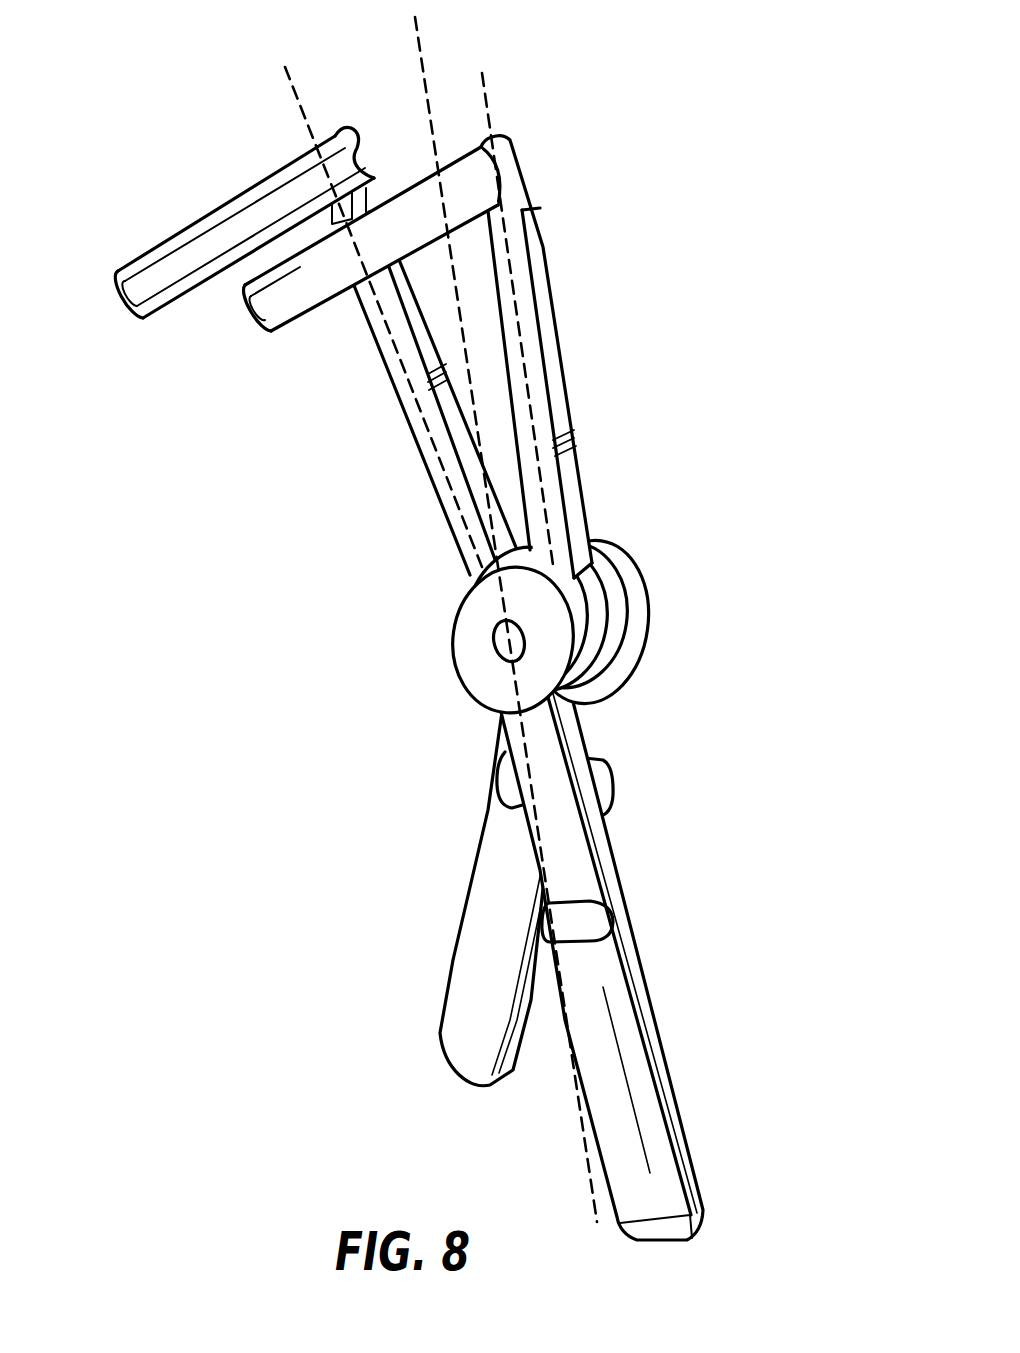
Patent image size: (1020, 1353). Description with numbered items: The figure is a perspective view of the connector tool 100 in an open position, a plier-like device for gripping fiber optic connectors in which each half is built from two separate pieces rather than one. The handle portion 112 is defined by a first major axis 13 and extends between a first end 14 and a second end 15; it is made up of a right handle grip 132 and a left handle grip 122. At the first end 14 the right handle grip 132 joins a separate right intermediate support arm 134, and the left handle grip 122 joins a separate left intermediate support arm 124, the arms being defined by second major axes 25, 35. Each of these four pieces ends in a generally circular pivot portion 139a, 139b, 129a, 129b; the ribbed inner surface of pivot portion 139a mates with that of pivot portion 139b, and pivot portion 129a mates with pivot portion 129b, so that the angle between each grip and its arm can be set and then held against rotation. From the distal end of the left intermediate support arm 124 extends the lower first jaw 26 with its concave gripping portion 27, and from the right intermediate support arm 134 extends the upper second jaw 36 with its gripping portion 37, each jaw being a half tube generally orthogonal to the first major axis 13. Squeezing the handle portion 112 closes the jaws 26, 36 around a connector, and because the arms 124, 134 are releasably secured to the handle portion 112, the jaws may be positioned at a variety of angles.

The connector tool 100 is at (628, 183).
The first major axis 13 is at (422, 55).
The second major axis 25 is at (300, 107).
The second major axis 35 is at (488, 108).
The first jaw 26 is at (231, 222).
The gripping portion 27 is at (217, 243).
The second jaw 36 is at (324, 278).
The gripping portion 37 is at (258, 312).
The right intermediate support arm 134 is at (562, 345).
The left intermediate support arm 124 is at (435, 492).
The pivot portion 139a is at (620, 578).
The pivot portion 139b is at (612, 617).
The pivot portion 129a is at (468, 646).
The pivot portion 129b is at (600, 655).
The first end 14 is at (603, 673).
The right handle grip 132 is at (463, 943).
The handle portion 112 is at (650, 965).
The left handle grip 122 is at (666, 1058).
The second end 15 is at (567, 965).